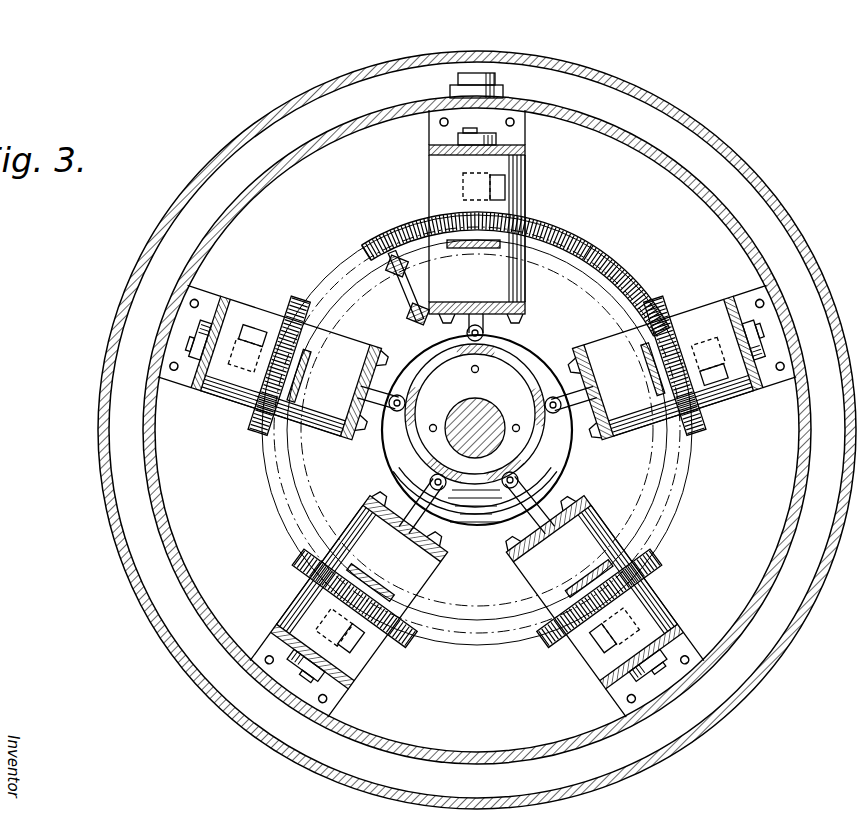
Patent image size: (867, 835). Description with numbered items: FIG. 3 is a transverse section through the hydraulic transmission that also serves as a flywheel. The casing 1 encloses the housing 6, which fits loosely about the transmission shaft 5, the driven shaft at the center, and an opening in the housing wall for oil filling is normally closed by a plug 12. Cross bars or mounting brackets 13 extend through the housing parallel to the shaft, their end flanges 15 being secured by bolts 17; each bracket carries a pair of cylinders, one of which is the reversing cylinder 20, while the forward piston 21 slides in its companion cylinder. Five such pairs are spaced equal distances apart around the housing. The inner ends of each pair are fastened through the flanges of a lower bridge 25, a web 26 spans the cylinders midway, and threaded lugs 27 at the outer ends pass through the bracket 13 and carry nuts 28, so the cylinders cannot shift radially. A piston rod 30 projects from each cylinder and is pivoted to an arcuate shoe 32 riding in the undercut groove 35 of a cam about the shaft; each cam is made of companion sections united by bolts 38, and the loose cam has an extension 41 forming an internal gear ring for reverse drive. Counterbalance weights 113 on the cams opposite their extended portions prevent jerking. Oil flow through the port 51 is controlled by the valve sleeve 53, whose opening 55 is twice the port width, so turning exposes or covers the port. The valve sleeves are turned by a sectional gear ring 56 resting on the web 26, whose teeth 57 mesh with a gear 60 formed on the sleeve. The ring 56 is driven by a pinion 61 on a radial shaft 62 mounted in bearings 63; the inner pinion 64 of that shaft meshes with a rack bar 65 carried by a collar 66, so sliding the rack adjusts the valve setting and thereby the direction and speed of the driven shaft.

The casing 1 is at (712, 125).
The transmission shaft 5 is at (462, 410).
The housing 6 is at (735, 182).
The plug 12 is at (474, 75).
The cross bars or mounting brackets 13 is at (527, 150).
The flange 15 is at (429, 133).
The bolt 17 is at (514, 124).
The cylinder 20 is at (527, 293).
The piston 21 is at (488, 120).
The lower bridge 25 is at (500, 304).
The web 26 is at (505, 253).
The threaded lugs 27 is at (772, 345).
The nuts 28 is at (458, 136).
The piston rod 30 is at (487, 333).
The shoe 32 is at (535, 397).
The undercut groove or channel 35 is at (648, 333).
The bolts 38 is at (516, 426).
The extension 41 is at (598, 398).
The port 51 is at (463, 188).
The valve sleeve 53 is at (430, 160).
The opening 55 is at (505, 186).
The gear ring 56 is at (585, 247).
The teeth 57 is at (705, 352).
The gear 60 is at (522, 226).
The pinion 61 is at (380, 240).
The shaft 62 is at (404, 294).
The bearings 63 is at (412, 314).
The pinion 64 is at (447, 300).
The rack bar 65 is at (471, 368).
The collar 66 is at (650, 410).
The counterbalance weights 113 is at (468, 543).